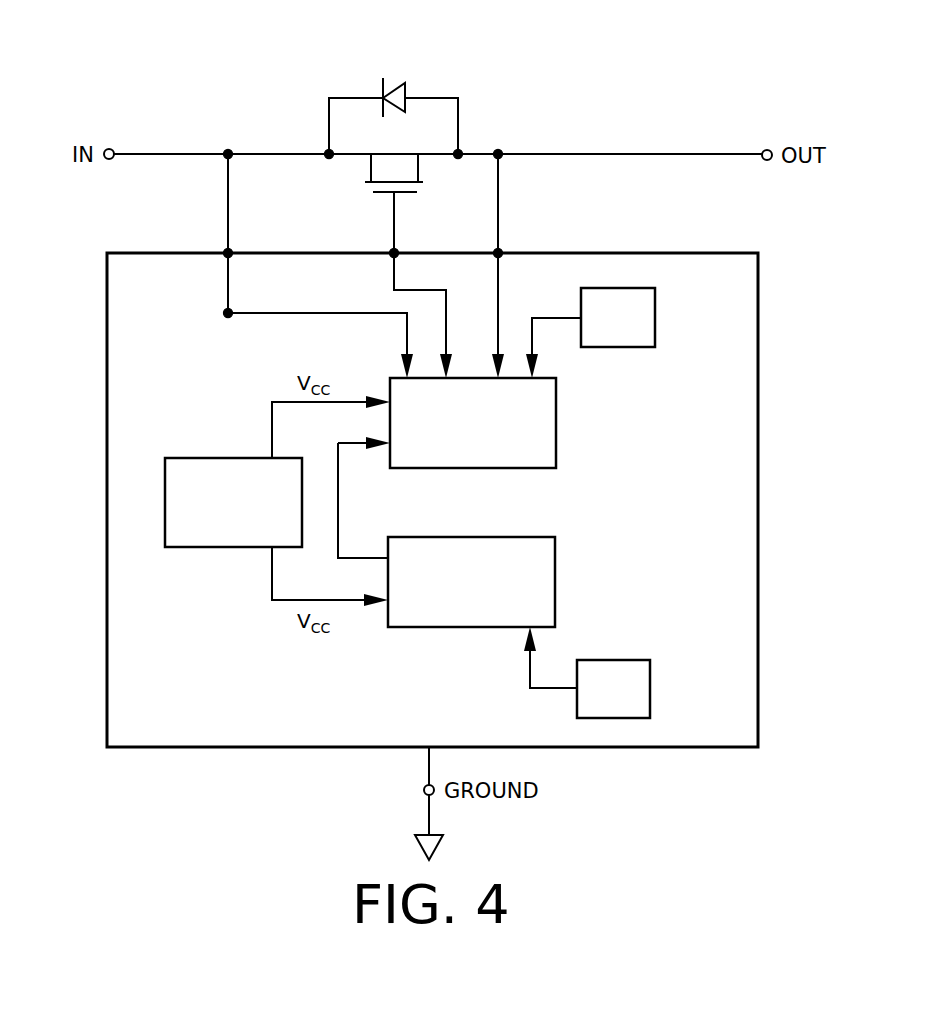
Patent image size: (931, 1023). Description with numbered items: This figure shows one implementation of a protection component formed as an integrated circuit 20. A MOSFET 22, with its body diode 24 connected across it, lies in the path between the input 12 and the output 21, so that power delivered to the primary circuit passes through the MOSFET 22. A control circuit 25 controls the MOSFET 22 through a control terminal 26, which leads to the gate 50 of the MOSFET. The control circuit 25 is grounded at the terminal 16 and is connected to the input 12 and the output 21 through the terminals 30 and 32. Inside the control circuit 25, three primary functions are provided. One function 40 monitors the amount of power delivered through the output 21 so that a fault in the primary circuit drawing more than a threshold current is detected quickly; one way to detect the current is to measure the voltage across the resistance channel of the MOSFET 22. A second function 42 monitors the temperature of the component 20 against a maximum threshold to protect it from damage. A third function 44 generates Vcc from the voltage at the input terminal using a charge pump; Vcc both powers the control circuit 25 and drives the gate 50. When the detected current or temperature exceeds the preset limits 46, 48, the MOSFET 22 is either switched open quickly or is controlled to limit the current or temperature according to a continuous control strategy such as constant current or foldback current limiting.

The input 12 is at (109, 148).
The terminal 16 is at (423, 789).
The integrated circuit 20 is at (676, 71).
The output 21 is at (768, 150).
The MOSFET 22 is at (419, 168).
The body diode 24 is at (406, 91).
The control circuit 25 is at (690, 253).
The control terminal 26 is at (394, 253).
The terminal 30 is at (228, 253).
The terminal 32 is at (498, 253).
The function 40 is at (557, 420).
The second function 42 is at (556, 580).
The third function 44 is at (205, 548).
The preset limit 46 is at (632, 332).
The preset limit 48 is at (628, 703).
The gate 50 is at (395, 218).